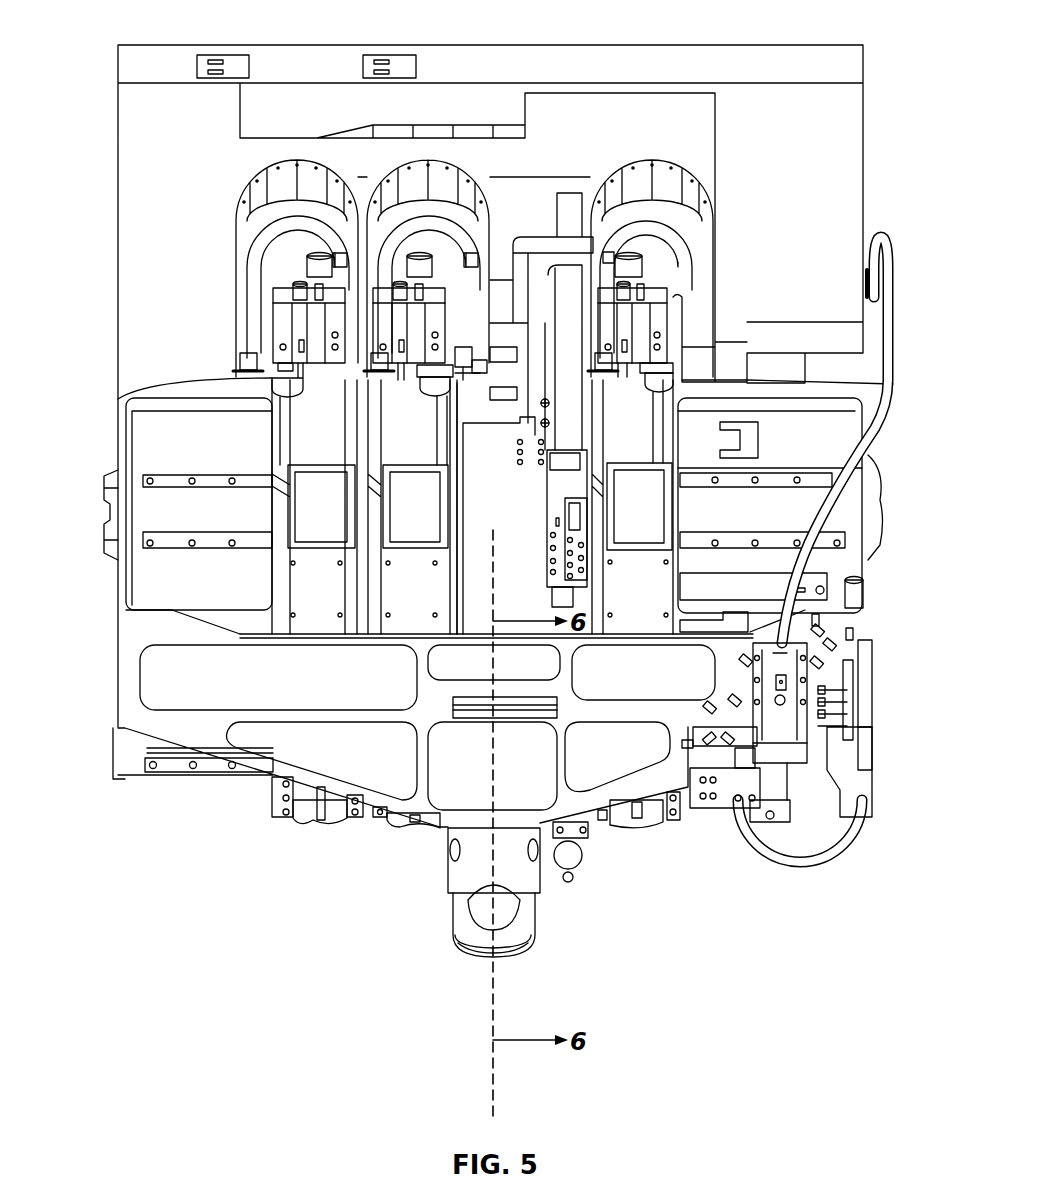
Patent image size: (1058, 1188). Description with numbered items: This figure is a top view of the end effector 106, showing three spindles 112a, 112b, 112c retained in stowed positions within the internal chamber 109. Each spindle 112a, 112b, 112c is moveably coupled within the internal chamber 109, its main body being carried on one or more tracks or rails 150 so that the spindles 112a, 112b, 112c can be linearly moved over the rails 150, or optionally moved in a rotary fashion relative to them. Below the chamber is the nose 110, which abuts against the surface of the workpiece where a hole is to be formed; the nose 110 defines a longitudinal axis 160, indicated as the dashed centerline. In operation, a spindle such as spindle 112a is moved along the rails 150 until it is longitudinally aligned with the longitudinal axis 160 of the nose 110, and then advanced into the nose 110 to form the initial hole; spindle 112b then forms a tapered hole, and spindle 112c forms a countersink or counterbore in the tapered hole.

The end effector 106 is at (131, 42).
The internal chamber 109 is at (147, 470).
The nose 110 is at (452, 907).
The spindle 112a is at (322, 505).
The spindle 112b is at (416, 505).
The spindle 112c is at (648, 517).
The rails 150 is at (167, 482).
The longitudinal axis 160 is at (493, 1095).